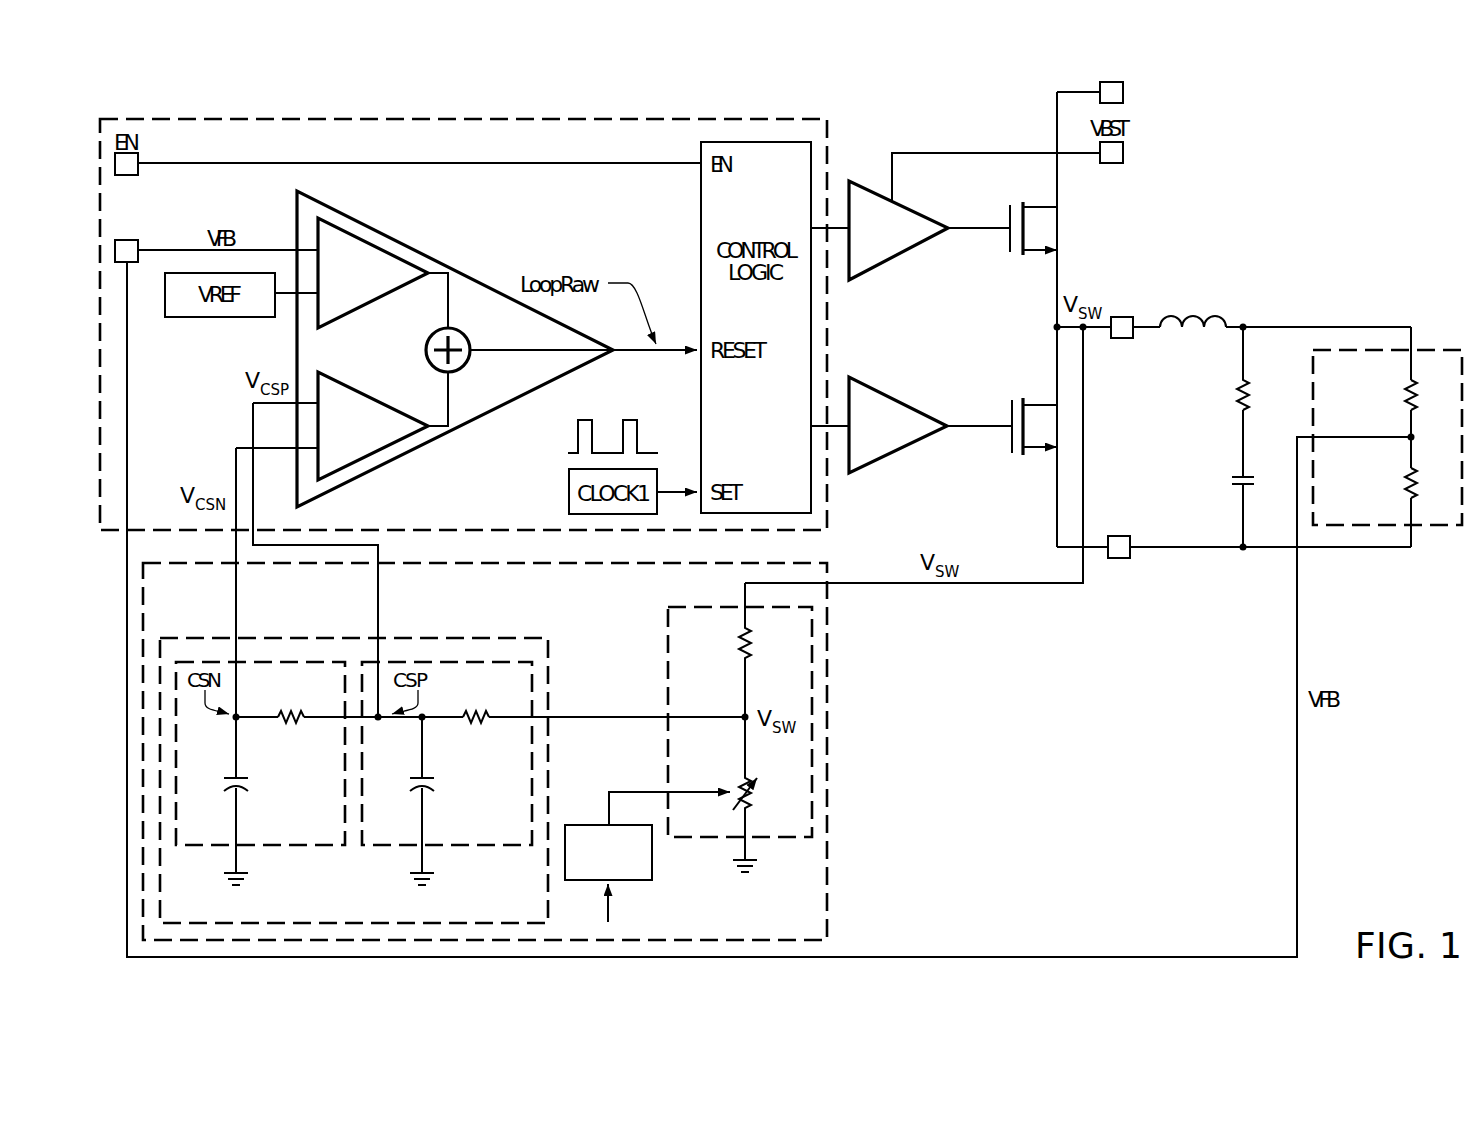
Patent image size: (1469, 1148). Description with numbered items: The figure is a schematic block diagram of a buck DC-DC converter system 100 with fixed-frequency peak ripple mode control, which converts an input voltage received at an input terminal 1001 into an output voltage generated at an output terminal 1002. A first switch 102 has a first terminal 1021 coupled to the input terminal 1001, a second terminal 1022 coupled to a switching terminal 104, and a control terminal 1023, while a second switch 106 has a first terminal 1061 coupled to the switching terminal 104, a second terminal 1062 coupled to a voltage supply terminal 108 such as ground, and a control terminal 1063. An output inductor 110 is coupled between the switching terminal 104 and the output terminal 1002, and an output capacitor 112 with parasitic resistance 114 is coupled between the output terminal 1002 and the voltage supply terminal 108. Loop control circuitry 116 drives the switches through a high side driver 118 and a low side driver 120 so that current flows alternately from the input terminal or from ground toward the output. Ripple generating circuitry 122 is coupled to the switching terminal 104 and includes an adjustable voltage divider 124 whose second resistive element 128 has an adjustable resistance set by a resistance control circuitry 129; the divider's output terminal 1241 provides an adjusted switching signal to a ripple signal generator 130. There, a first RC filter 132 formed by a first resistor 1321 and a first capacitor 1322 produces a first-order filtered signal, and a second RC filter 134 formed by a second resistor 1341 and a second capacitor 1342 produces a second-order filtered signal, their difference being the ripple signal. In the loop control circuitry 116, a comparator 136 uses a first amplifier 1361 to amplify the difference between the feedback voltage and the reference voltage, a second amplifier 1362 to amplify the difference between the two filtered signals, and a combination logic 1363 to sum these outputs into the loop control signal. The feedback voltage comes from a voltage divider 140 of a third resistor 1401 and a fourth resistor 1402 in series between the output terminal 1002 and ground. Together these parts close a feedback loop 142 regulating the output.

The converter system 100 is at (1367, 118).
The loop control circuitry 116 is at (397, 116).
The comparator 136 is at (473, 270).
The first amplifier 1361 is at (384, 247).
The second amplifier 1362 is at (379, 454).
The combination logic 1363 is at (426, 347).
The high side driver 118 is at (900, 204).
The first switch 102 is at (1004, 243).
The first terminal 1021 is at (1060, 197).
The second terminal 1022 is at (1060, 262).
The control terminal 1023 is at (1008, 230).
The input terminal 1001 is at (1125, 88).
The low side driver 120 is at (896, 399).
The second switch 106 is at (1004, 442).
The first terminal 1061 is at (1050, 396).
The second terminal 1062 is at (1050, 459).
The control terminal 1063 is at (1006, 426).
The switching terminal 104 is at (1122, 340).
The output inductor 110 is at (1207, 316).
The output capacitor 112 is at (1235, 396).
The parasitic resistance 114 is at (1232, 480).
The voltage supply terminal 108 is at (1120, 558).
The output terminal 1002 is at (1330, 326).
The voltage divider 140 is at (1431, 342).
The third resistor 1401 is at (1405, 395).
The fourth resistor 1402 is at (1405, 485).
The feedback loop 142 is at (1022, 634).
The ripple generating circuitry 122 is at (832, 778).
The ripple signal generator 130 is at (300, 636).
The second RC filter 134 is at (289, 850).
The first RC filter 132 is at (475, 850).
The second resistor 1341 is at (291, 724).
The second capacitor 1342 is at (250, 783).
The first resistor 1321 is at (476, 724).
The first capacitor 1322 is at (436, 783).
The adjustable voltage divider 124 is at (665, 694).
The output terminal 1241 is at (742, 714).
The second resistive element 128 is at (738, 780).
The resistance control circuitry 129 is at (628, 870).